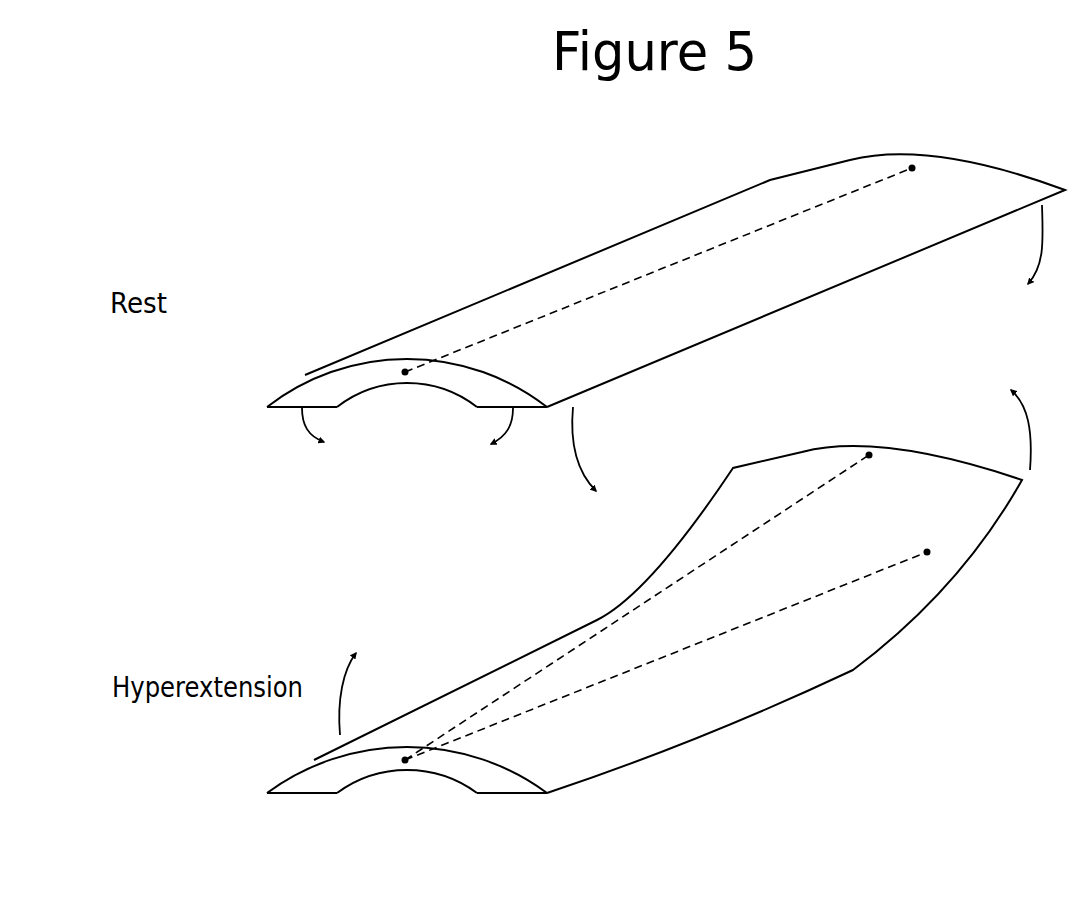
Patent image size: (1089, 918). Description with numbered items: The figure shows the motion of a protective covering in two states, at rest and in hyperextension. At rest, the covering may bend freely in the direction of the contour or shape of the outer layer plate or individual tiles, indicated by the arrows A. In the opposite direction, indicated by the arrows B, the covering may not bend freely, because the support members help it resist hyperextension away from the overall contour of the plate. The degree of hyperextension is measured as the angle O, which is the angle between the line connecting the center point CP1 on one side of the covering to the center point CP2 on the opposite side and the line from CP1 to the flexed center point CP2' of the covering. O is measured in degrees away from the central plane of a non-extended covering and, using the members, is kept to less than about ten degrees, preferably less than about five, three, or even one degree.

The center point CP1 is at (405, 601).
The center point CP2 is at (956, 344).
The flexed center point CP2' is at (910, 431).
The angle of hyperextension O is at (666, 464).
The direction of free bending A is at (665, 348).
The direction of restricted bending B is at (685, 562).